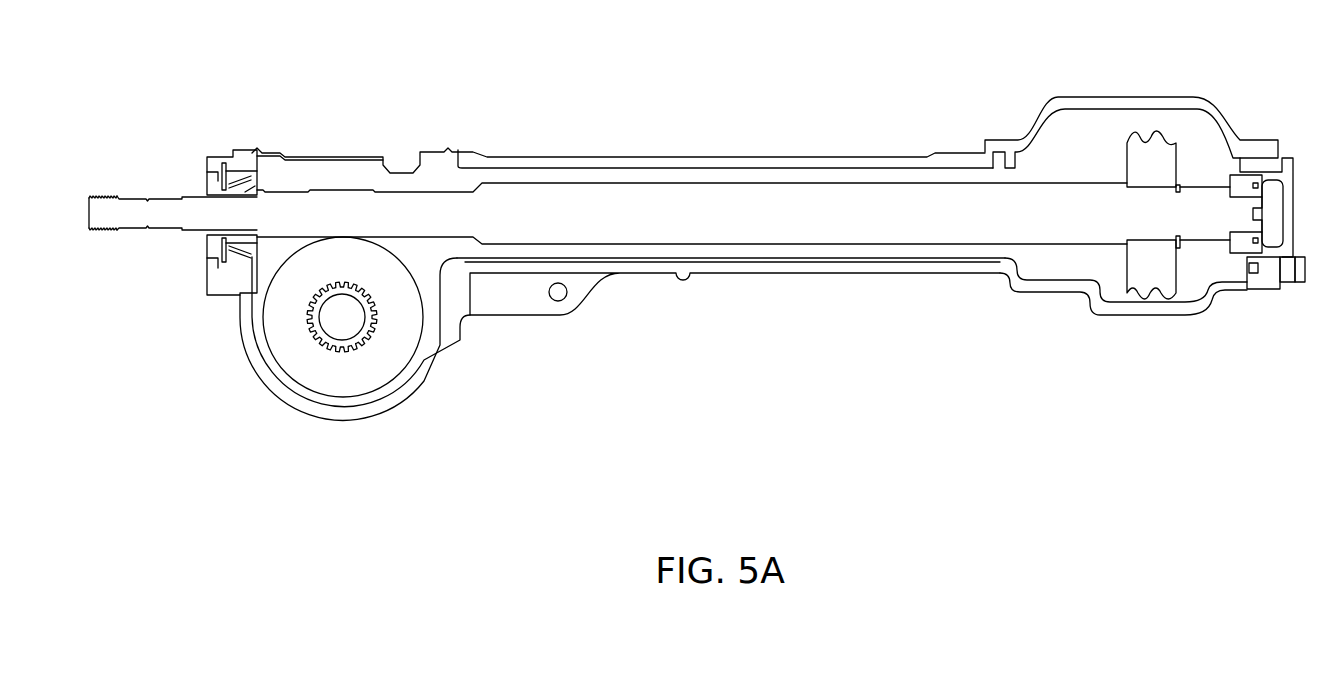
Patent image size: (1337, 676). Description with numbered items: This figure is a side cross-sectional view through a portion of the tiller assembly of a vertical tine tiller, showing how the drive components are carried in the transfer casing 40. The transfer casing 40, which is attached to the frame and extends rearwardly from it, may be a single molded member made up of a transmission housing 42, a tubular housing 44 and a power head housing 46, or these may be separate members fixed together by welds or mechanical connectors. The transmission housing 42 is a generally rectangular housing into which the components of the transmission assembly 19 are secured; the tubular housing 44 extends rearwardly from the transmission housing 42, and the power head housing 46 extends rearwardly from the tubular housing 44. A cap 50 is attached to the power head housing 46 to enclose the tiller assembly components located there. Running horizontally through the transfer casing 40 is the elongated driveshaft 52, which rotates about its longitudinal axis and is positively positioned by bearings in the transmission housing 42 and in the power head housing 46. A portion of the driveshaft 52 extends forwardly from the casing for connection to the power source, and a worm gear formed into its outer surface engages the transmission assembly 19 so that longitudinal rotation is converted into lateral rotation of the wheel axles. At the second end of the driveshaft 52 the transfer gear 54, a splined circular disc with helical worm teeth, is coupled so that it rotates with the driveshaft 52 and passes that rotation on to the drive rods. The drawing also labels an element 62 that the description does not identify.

The transmission assembly 19 is at (358, 372).
The transfer casing 40 is at (653, 266).
The transmission housing 42 is at (420, 378).
The tubular housing 44 is at (835, 267).
The power head housing 46 is at (1032, 287).
The cap 50 is at (1097, 92).
The driveshaft 52 is at (731, 200).
The transfer gear 54 is at (1158, 167).
The seal 62 is at (245, 190).